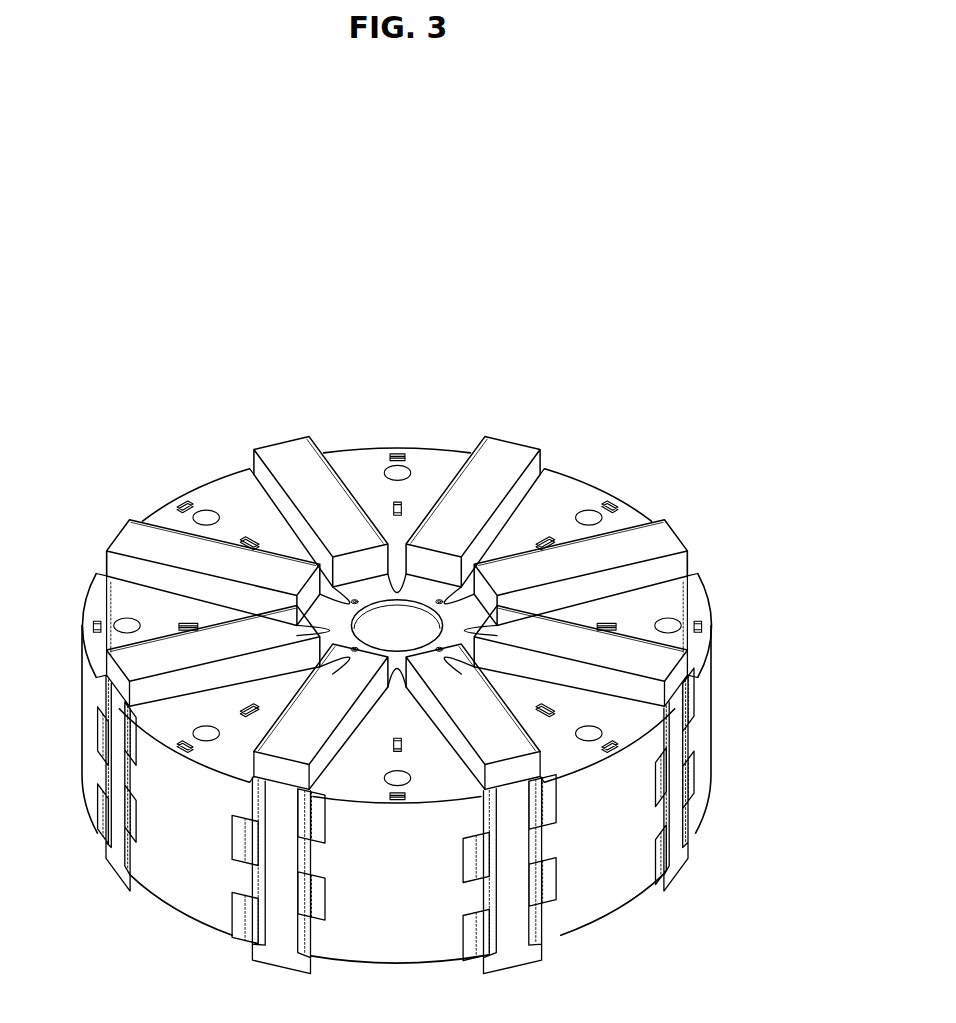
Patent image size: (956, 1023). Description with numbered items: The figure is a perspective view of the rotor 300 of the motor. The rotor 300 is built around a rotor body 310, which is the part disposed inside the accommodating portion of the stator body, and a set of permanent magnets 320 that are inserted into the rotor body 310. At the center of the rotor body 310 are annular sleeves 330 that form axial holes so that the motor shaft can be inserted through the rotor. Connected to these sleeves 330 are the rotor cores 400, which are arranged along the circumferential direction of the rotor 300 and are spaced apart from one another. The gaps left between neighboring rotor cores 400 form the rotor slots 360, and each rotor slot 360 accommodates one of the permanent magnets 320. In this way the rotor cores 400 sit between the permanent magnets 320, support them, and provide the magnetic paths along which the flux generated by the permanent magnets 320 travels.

The rotor 300 is at (556, 290).
The rotor body 310 is at (188, 478).
The permanent magnets 320 is at (284, 450).
The annular sleeves 330 is at (425, 597).
The rotor slots 360 is at (513, 508).
The rotor cores 400 is at (653, 603).